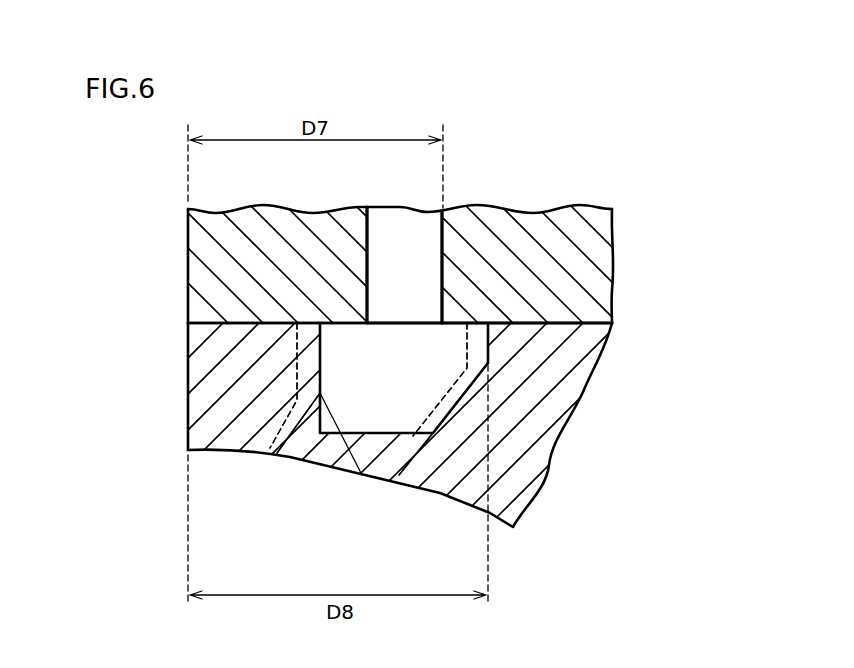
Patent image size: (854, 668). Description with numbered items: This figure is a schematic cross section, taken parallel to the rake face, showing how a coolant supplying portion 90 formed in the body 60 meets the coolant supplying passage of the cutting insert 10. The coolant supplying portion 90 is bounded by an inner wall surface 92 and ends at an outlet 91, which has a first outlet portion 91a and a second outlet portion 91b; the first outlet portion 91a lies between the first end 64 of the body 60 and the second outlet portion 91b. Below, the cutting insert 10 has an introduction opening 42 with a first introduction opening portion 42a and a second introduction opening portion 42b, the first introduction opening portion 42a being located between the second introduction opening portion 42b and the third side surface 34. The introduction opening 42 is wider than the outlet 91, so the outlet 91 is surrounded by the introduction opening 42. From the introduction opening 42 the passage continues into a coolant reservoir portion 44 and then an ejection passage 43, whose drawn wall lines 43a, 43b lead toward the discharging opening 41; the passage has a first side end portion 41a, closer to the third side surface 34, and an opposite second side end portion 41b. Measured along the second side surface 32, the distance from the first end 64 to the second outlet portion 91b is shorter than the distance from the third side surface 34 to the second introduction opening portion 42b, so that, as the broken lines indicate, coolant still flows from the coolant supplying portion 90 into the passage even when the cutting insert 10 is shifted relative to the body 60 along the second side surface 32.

The cutting insert 10 is at (515, 473).
The second side surface 32 is at (210, 322).
The third side surface 34 is at (188, 383).
The discharging opening 41 is at (340, 534).
The first side end portion 41a is at (283, 453).
The second side end portion 41b is at (350, 455).
The introduction opening 42 is at (674, 296).
The first introduction opening portion 42a is at (323, 355).
The second introduction opening portion 42b is at (498, 322).
The ejection passage 43 is at (440, 534).
The inclined wall surface 43a is at (405, 462).
The inclined wall surface (hidden) 43b is at (358, 444).
The coolant reservoir portion 44 is at (360, 323).
The body 60 is at (578, 258).
The first end 64 is at (188, 263).
The coolant supplying portion 90 is at (447, 124).
The outlet 91 is at (478, 154).
The first outlet portion 91a is at (368, 320).
The second outlet portion 91b is at (443, 318).
The inner wall surface 92 is at (367, 250).